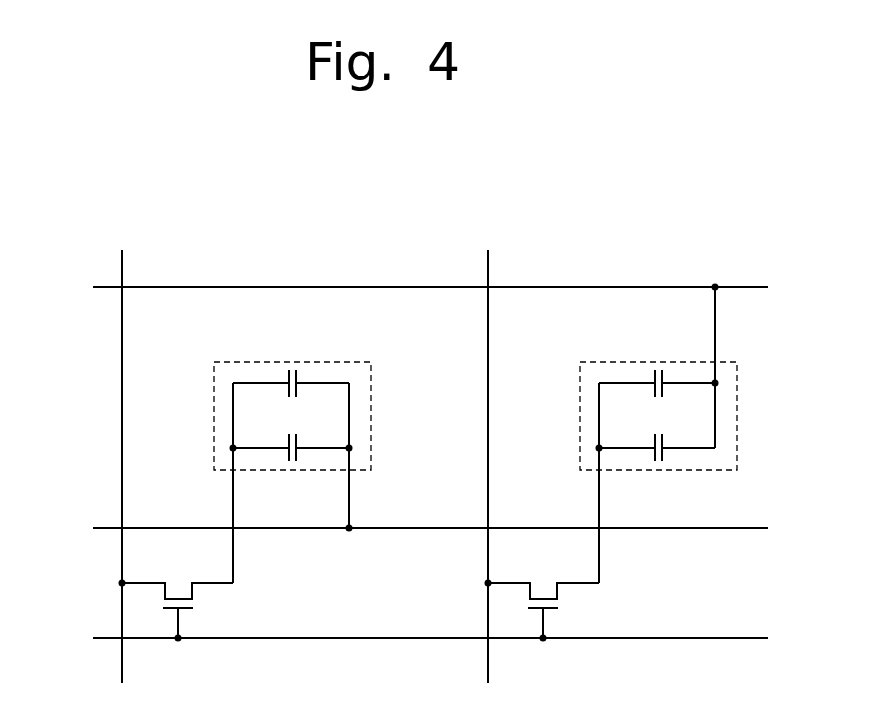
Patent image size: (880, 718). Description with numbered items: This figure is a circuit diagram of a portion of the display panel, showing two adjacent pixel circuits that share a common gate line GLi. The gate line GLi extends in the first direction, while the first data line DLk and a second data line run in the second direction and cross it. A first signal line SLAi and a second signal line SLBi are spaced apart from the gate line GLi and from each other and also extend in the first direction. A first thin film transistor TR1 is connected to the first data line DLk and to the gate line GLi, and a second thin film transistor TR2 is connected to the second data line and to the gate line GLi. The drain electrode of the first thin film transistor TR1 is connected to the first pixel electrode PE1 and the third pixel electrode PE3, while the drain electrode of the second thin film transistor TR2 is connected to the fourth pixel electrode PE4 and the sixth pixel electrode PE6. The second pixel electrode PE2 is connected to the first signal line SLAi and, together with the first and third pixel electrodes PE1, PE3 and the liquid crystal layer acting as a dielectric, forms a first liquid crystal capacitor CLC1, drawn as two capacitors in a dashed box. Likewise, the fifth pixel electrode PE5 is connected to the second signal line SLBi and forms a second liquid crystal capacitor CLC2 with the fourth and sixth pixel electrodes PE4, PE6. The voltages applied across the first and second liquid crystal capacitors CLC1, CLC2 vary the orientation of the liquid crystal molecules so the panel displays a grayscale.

The first data line DLk is at (122, 454).
The second signal line SLBi is at (402, 286).
The first signal line SLAi is at (402, 526).
The gate line GLi is at (409, 636).
The first thin film transistor TR1 is at (176, 597).
The second thin film transistor TR2 is at (542, 597).
The first liquid crystal capacitor CLC1 is at (334, 451).
The second liquid crystal capacitor CLC2 is at (700, 435).
The first pixel electrode PE1 is at (287, 457).
The second pixel electrode PE2 is at (298, 375).
The third pixel electrode PE3 is at (287, 375).
The fourth pixel electrode PE4 is at (653, 457).
The fifth pixel electrode PE5 is at (664, 375).
The sixth pixel electrode PE6 is at (653, 375).